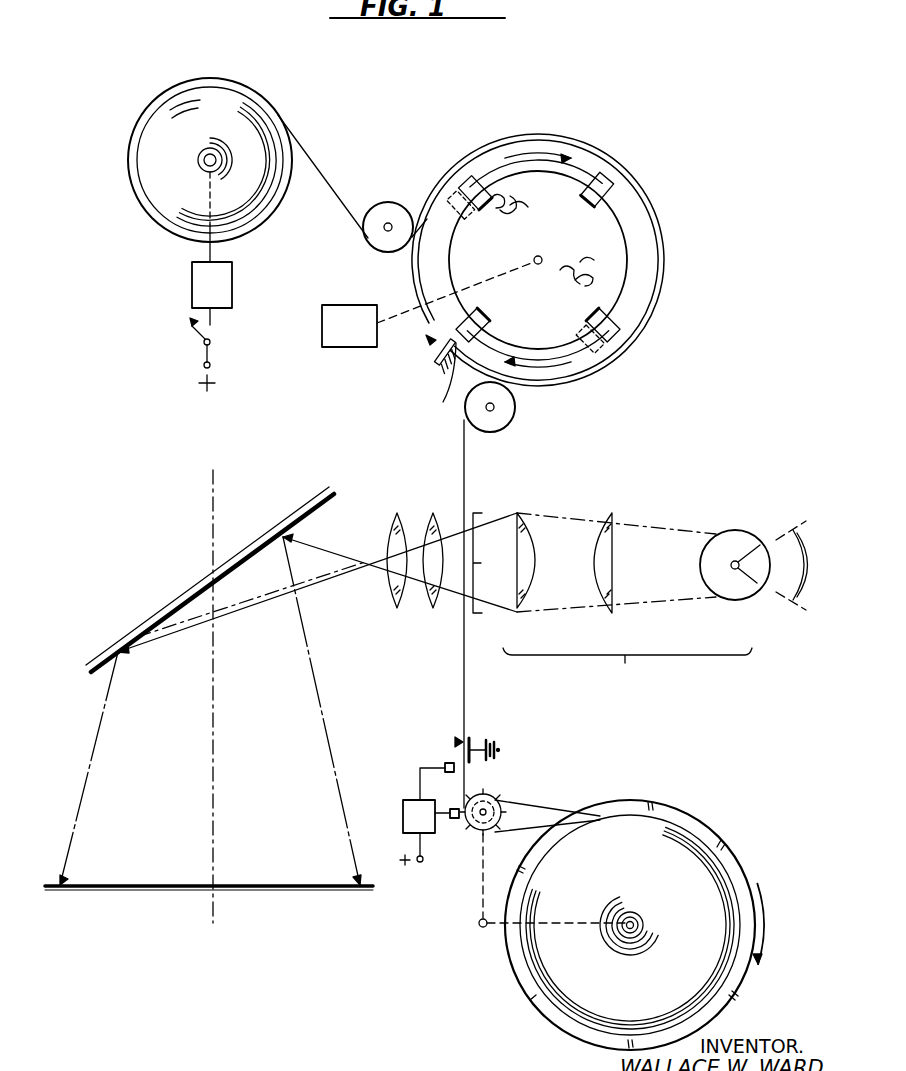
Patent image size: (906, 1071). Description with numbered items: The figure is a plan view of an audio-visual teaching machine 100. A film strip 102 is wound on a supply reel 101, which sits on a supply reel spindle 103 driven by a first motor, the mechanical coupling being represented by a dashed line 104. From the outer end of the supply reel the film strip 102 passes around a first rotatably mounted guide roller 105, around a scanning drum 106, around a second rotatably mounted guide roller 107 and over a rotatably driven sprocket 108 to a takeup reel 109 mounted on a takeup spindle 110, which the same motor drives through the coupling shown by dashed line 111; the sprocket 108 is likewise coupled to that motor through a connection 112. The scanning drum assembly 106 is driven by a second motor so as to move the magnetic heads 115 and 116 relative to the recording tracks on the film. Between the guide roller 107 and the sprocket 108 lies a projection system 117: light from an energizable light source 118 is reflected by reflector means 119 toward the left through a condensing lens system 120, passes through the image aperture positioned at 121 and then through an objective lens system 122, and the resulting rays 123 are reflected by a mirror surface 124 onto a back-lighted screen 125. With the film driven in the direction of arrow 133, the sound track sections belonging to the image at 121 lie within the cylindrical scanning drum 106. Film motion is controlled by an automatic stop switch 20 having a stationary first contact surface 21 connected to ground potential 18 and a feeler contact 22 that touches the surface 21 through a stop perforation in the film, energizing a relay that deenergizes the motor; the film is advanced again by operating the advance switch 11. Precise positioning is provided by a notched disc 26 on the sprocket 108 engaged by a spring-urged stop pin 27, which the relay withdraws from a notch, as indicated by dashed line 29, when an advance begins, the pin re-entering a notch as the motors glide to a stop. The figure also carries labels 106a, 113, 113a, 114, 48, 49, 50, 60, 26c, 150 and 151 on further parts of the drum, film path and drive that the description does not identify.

The audio-visual teaching machine 100 is at (100, 276).
The supply reel 101 is at (130, 140).
The film strip 102 is at (334, 208).
The supply reel spindle 103 is at (198, 162).
The dashed line 104 is at (212, 254).
The first guide roller 105 is at (402, 210).
The scanning drum 106 is at (638, 170).
The film guide section 106a is at (410, 302).
The second guide roller 107 is at (516, 414).
The sprocket wheel 108 is at (500, 802).
The takeup reel 109 is at (703, 818).
The takeup spindle 110 is at (641, 916).
The dashed line 111 is at (480, 927).
The mechanical coupling 112 is at (482, 878).
The drum 113 is at (563, 232).
The drum axis 113a is at (537, 266).
The motor connection 114 is at (375, 350).
The magnetic head 115 is at (458, 205).
The magnetic head 116 is at (612, 318).
The projection system 117 is at (758, 604).
The light source 118 is at (757, 530).
The reflector means 119 is at (800, 545).
The condensing lens system 120 is at (627, 602).
The image aperture position 121 is at (455, 605).
The objective lens system 122 is at (432, 486).
The light rays 123 is at (318, 556).
The mirror surface 124 is at (316, 505).
The back-lighted screen 125 is at (108, 895).
The arrow 133 is at (477, 622).
The advance switch 11 is at (195, 341).
The ground potential 18 is at (432, 372).
The automatic stop switch 20 is at (444, 768).
The stationary contact surface 21 is at (478, 741).
The feeler contact 22 is at (455, 742).
The disc 26 is at (490, 836).
The film strip section 26c is at (505, 808).
The stop pin 27 is at (454, 808).
The dashed line 29 is at (465, 828).
The film clamp 48 is at (484, 325).
The film exit guide 49 is at (442, 384).
The film wrap on drum 50 is at (468, 345).
The film clamp 60 is at (583, 205).
The rotation arrow 150 is at (770, 923).
The film motion arrow 151 is at (478, 776).